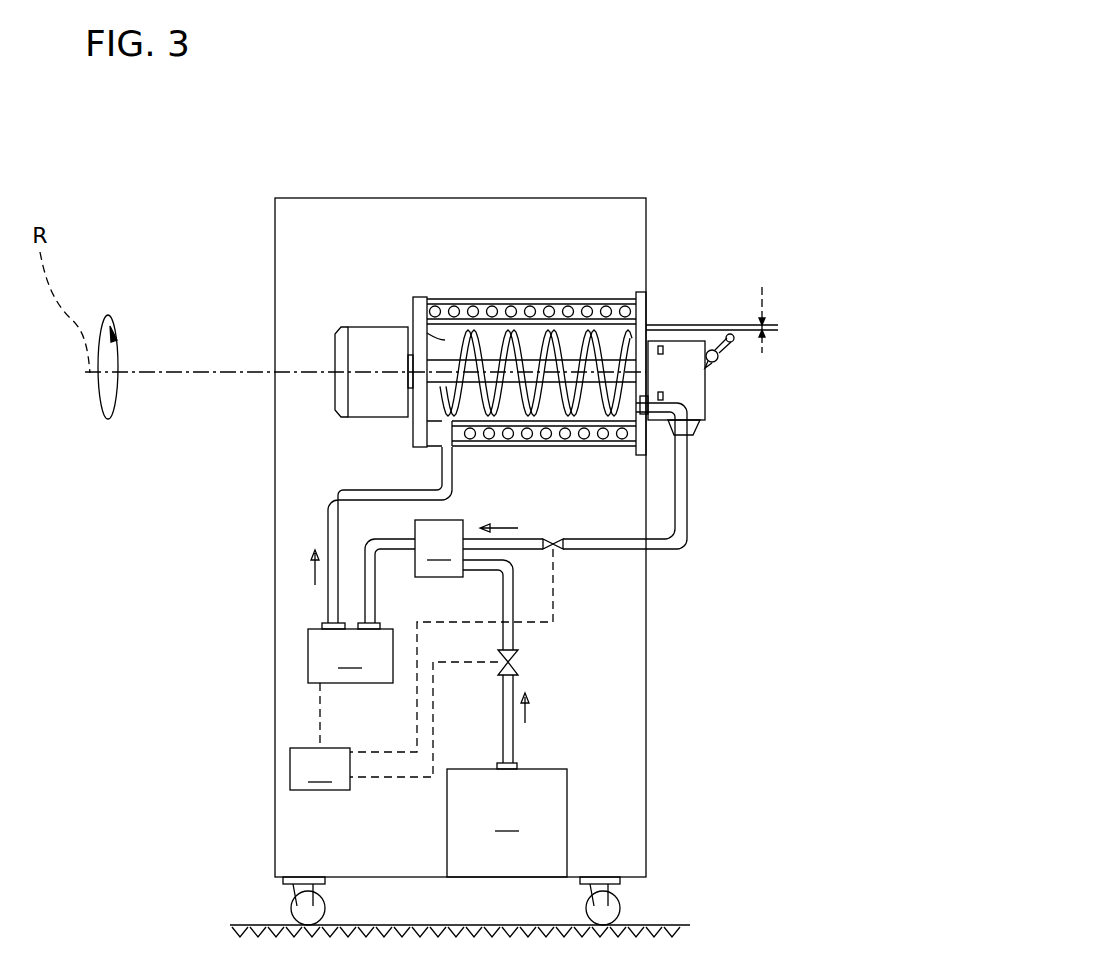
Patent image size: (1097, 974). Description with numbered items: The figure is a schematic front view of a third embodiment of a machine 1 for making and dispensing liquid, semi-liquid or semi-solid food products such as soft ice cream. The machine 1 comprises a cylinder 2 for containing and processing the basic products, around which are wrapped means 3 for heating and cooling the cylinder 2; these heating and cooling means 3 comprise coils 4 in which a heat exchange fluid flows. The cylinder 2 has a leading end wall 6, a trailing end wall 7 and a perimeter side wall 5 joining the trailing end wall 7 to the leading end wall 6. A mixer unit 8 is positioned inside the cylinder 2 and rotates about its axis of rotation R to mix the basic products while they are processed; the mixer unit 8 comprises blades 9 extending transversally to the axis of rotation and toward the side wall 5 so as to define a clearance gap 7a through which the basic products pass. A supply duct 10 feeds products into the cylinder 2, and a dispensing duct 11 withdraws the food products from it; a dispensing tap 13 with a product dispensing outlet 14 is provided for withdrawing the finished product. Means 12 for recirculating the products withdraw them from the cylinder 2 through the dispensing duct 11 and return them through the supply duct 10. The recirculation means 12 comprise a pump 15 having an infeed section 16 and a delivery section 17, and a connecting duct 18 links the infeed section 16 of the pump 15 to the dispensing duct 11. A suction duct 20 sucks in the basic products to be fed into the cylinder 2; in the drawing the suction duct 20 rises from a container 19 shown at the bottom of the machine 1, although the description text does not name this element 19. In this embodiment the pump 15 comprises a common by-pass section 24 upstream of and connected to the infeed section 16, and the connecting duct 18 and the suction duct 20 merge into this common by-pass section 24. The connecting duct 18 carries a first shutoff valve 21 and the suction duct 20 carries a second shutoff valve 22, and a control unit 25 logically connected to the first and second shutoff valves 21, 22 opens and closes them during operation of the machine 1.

The machine 1 is at (696, 150).
The cylinder 2 is at (483, 337).
The means for heating and cooling the cylinder 3 is at (493, 310).
The coils 4 is at (567, 310).
The perimeter side wall 5 is at (445, 392).
The leading end wall 6 is at (650, 440).
The trailing end wall 7 is at (434, 401).
The clearance gap 7a is at (721, 316).
The mixer unit 8 is at (443, 341).
The blades 9 is at (588, 342).
The supply duct 10 is at (322, 523).
The dispensing duct 11 is at (667, 378).
The means for recirculating the products 12 is at (654, 554).
The dispensing tap 13 is at (714, 360).
The product dispensing outlet 14 is at (689, 439).
The pump 15 is at (350, 656).
The infeed section 16 is at (360, 623).
The delivery section 17 is at (325, 623).
The connecting duct 18 is at (692, 524).
The supply tank 19 is at (507, 823).
The suction duct 20 is at (522, 740).
The first shutoff valve 21 is at (562, 554).
The second shutoff valve 22 is at (518, 672).
The common by-pass section 24 is at (479, 585).
The control unit 25 is at (320, 736).